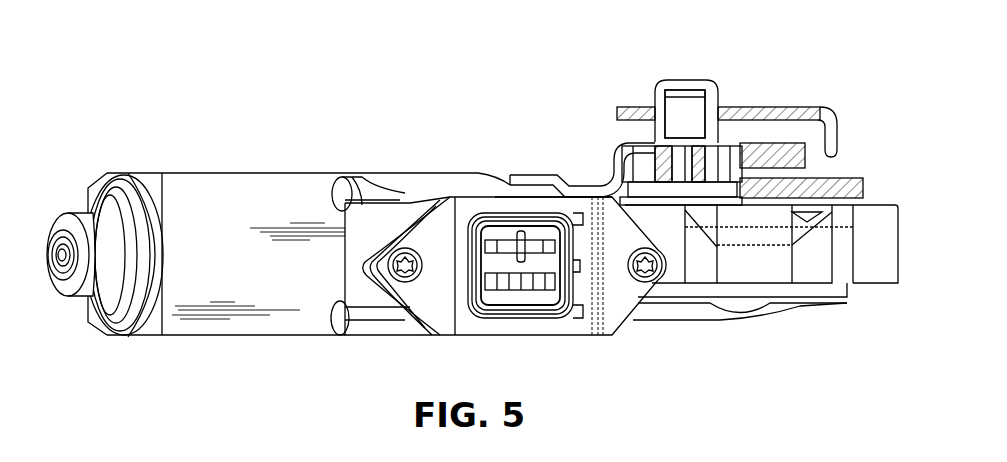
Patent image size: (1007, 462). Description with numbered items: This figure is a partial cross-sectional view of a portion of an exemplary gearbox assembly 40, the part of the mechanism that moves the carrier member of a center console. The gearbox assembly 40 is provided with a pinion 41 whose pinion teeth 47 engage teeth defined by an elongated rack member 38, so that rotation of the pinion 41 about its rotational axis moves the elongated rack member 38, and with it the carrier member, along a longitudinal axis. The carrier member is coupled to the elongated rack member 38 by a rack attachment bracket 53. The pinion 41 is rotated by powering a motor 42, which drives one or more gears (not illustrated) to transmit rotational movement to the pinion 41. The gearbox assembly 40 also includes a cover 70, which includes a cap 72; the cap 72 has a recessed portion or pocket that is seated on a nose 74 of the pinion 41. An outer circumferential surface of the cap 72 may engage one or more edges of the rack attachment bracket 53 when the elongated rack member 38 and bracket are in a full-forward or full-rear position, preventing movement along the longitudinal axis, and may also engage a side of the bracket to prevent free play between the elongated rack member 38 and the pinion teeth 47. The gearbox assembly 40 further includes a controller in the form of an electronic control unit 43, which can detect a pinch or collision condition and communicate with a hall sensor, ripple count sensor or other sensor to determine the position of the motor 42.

The elongated rack member 38 is at (808, 128).
The gearbox assembly 40 is at (731, 332).
The pinion 41 is at (727, 140).
The motor 42 is at (233, 270).
The electronic control unit 43 is at (493, 205).
The pinion teeth 47 is at (625, 158).
The rack attachment bracket 53 is at (800, 107).
The cover 70 is at (633, 104).
The cap 72 is at (700, 82).
The nose 74 is at (686, 110).